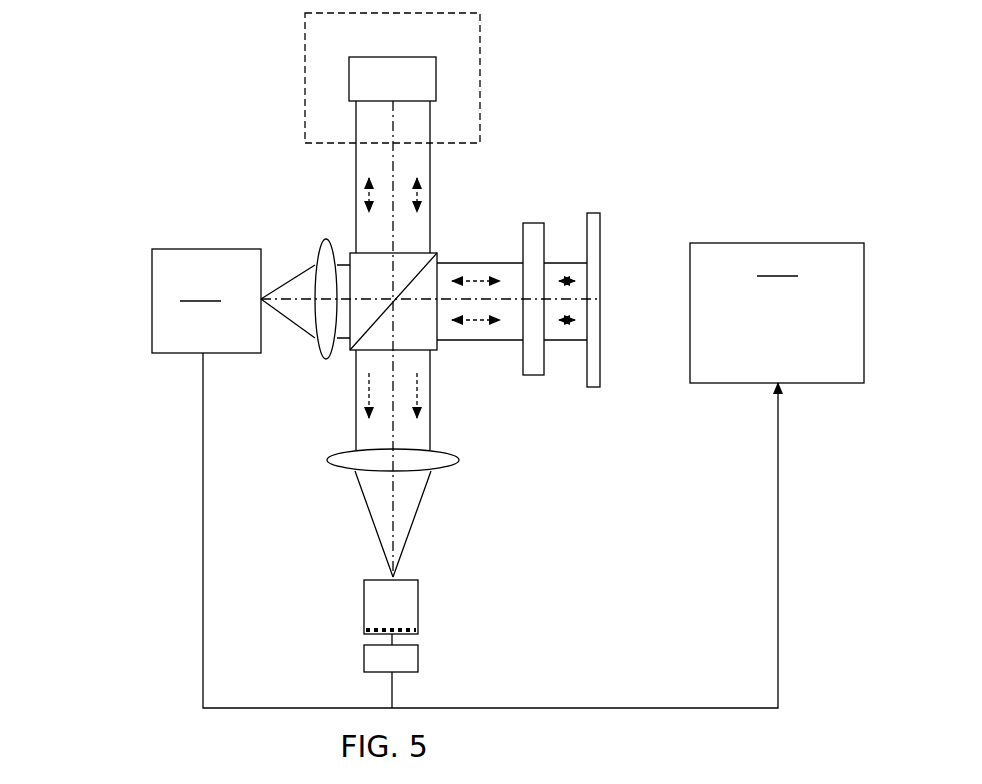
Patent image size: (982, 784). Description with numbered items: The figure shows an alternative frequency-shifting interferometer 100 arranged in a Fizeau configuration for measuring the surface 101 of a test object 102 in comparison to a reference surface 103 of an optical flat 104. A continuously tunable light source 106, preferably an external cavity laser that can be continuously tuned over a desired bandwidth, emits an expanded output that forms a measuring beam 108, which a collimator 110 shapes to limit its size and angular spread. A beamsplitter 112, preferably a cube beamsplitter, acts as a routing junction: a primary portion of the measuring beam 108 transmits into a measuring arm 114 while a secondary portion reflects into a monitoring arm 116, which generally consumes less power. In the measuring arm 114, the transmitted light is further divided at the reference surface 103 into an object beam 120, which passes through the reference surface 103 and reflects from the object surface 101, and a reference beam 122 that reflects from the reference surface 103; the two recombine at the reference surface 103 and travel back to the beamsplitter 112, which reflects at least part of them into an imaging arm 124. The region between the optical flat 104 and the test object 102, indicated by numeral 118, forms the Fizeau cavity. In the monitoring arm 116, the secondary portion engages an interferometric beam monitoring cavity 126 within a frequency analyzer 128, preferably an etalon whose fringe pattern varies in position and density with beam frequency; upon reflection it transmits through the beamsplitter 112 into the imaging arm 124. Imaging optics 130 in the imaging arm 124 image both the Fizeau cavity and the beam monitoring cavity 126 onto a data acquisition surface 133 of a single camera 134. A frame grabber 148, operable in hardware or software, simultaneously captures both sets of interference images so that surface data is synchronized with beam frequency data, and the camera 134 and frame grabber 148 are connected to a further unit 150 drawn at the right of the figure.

The frequency-shifting interferometer 100 is at (157, 180).
The object surface 101 is at (587, 353).
The test object 102 is at (600, 272).
The reference surface 103 is at (545, 245).
The optical flat 104 is at (528, 375).
The continuously tunable light source 106 is at (206, 301).
The measuring beam 108 is at (305, 272).
The collimator 110 is at (315, 352).
The beamsplitter 112 is at (367, 253).
The measuring arm 114 is at (482, 232).
The monitoring arm 116 is at (327, 172).
The beam between reference plate and sample 118 is at (568, 262).
The object beam 120 is at (490, 343).
The reference beam 122 is at (508, 350).
The imaging arm 124 is at (503, 473).
The beam monitoring cavity 126 is at (349, 70).
The frequency analyzer 128 is at (480, 72).
The imaging optics 130 is at (328, 462).
The data acquisition surface 133 is at (372, 628).
The camera 134 is at (412, 597).
The frame grabber 148 is at (415, 658).
The controller 150 is at (777, 313).